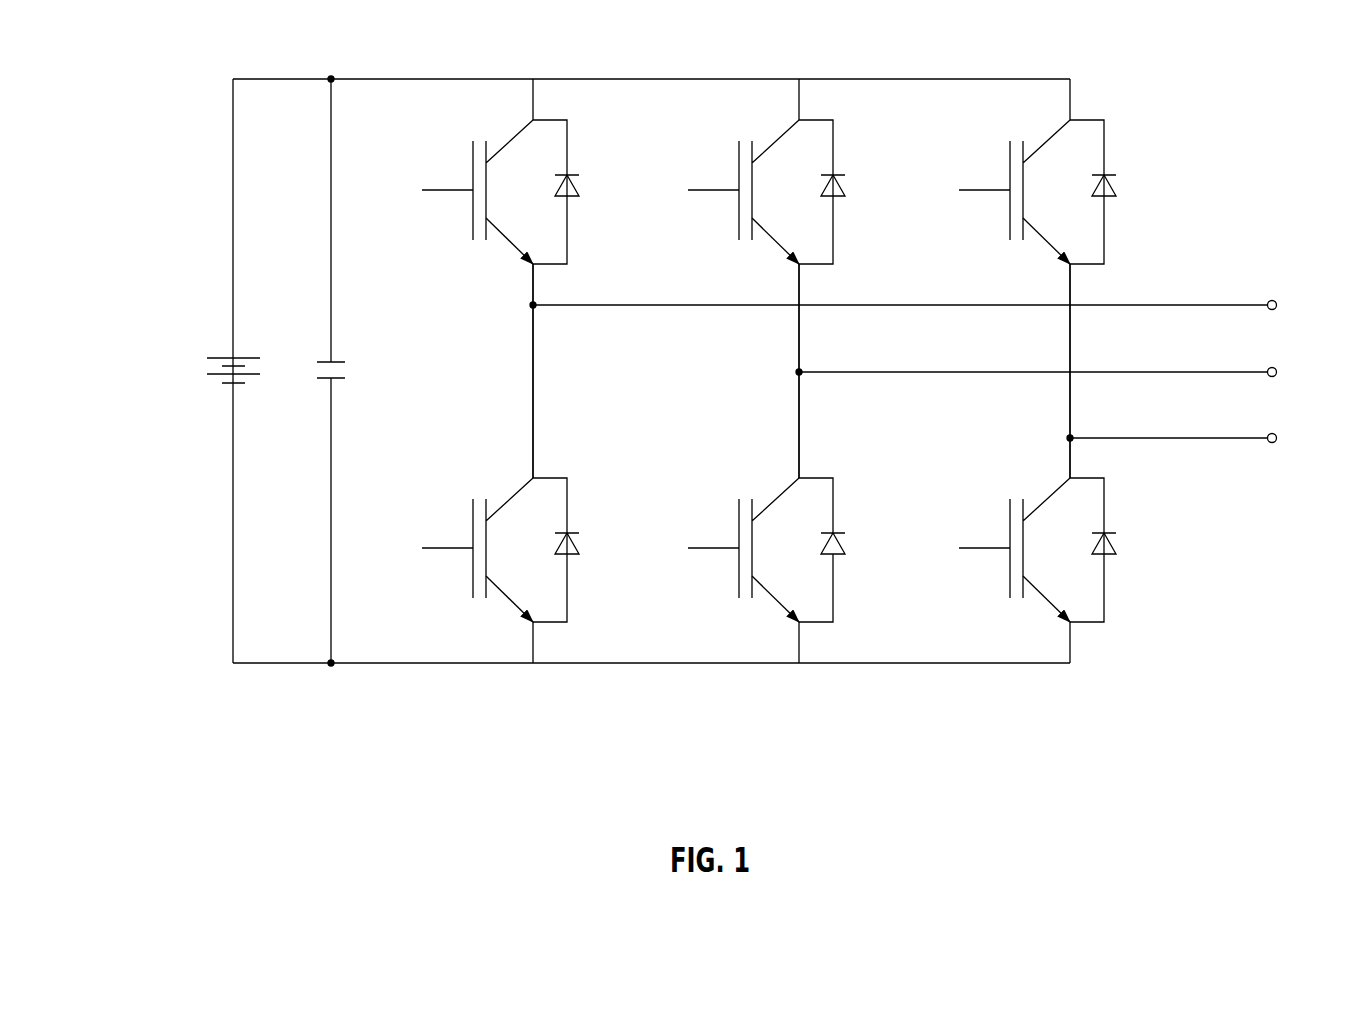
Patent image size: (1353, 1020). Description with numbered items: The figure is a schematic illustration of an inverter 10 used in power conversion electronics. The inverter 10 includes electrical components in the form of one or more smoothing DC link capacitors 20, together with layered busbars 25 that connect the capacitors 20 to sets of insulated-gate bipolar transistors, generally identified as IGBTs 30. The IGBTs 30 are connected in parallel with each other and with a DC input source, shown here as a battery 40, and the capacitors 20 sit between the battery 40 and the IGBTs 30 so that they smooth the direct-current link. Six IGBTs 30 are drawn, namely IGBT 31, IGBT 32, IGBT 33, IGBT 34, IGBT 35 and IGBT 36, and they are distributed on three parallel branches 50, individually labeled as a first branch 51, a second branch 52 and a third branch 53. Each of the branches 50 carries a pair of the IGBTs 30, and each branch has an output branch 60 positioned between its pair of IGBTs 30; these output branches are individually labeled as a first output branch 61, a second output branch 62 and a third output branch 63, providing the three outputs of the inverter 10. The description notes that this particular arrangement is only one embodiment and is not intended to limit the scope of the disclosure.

The inverter 10 is at (1102, 723).
The smoothing DC link capacitor 20 is at (345, 370).
The layered busbar 25 is at (331, 525).
The insulated-gate bipolar transistor 30 is at (833, 598).
The IGBT 31 is at (477, 192).
The IGBT 32 is at (1013, 550).
The IGBT 33 is at (742, 192).
The IGBT 34 is at (477, 550).
The IGBT 35 is at (1013, 192).
The IGBT 36 is at (772, 550).
The battery 40 is at (140, 360).
The parallel branch 50 is at (529, 650).
The first branch 51 is at (533, 425).
The second branch 52 is at (799, 425).
The third branch 53 is at (1070, 298).
The output branch 60 is at (1215, 438).
The first output branch 61 is at (931, 307).
The second output branch 62 is at (1064, 374).
The third output branch 63 is at (1200, 441).